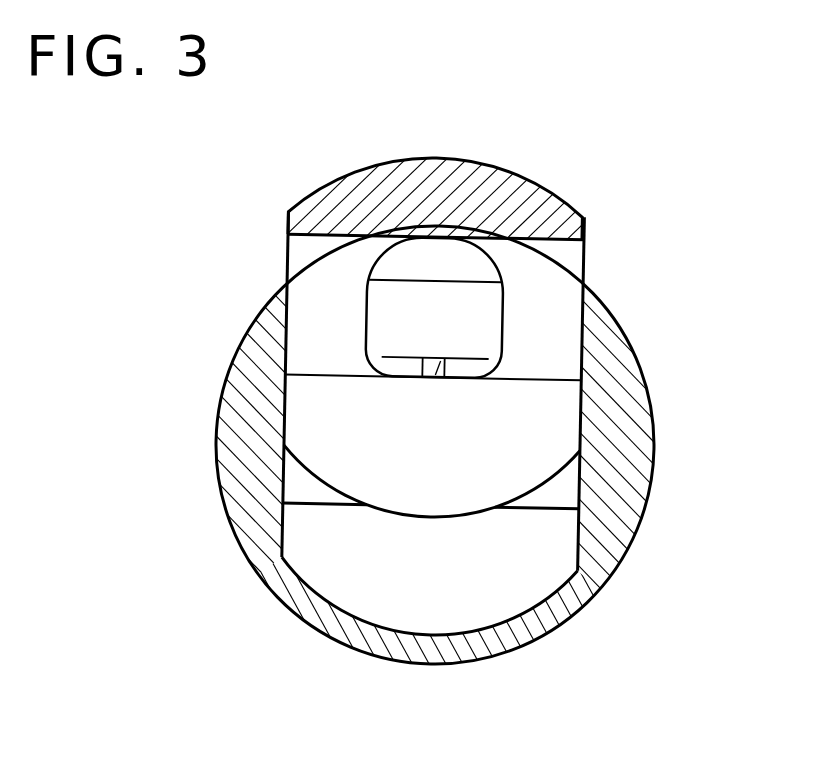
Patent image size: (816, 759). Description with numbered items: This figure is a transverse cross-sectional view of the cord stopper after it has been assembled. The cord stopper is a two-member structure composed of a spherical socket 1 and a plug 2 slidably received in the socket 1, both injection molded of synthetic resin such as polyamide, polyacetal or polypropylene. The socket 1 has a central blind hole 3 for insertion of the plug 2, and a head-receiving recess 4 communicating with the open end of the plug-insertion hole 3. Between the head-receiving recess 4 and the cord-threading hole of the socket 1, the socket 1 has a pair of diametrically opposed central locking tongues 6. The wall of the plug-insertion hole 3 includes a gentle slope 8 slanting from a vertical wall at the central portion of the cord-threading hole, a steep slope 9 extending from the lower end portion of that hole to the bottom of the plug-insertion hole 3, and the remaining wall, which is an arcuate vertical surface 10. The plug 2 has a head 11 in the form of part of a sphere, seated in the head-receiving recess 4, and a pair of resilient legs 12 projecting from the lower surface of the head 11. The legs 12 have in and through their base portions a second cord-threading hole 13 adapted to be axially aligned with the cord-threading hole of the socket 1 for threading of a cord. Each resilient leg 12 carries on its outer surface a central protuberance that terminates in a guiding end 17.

The spherical socket 1 is at (309, 625).
The plug 2 is at (536, 170).
The central blind hole 3 is at (282, 423).
The head-receiving recess 4 is at (385, 316).
The central locking tongues 6 is at (437, 372).
The gentle slope 8 is at (612, 520).
The steep slope 9 is at (578, 608).
The arcuate vertical surface 10 is at (583, 472).
The head 11 is at (410, 198).
The resilient legs 12 is at (543, 412).
The second cord-threading hole 13 is at (502, 267).
The guiding end 17 is at (453, 490).